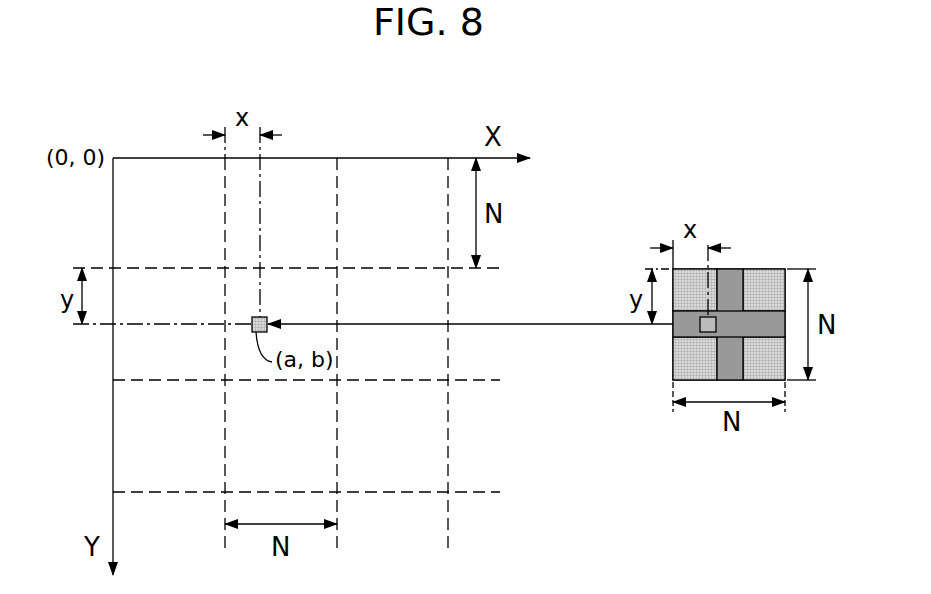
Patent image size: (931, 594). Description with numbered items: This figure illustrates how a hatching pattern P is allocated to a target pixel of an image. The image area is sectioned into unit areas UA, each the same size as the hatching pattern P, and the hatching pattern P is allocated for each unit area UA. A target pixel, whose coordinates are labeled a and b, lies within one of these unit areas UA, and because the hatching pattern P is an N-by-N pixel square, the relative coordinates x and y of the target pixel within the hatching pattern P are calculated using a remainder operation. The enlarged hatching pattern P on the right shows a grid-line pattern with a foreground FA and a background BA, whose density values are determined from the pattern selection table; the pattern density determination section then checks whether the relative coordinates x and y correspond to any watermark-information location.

The hatching pattern P is at (697, 298).
The foreground FA is at (680, 332).
The background BA is at (683, 372).
The unit area UA is at (424, 353).